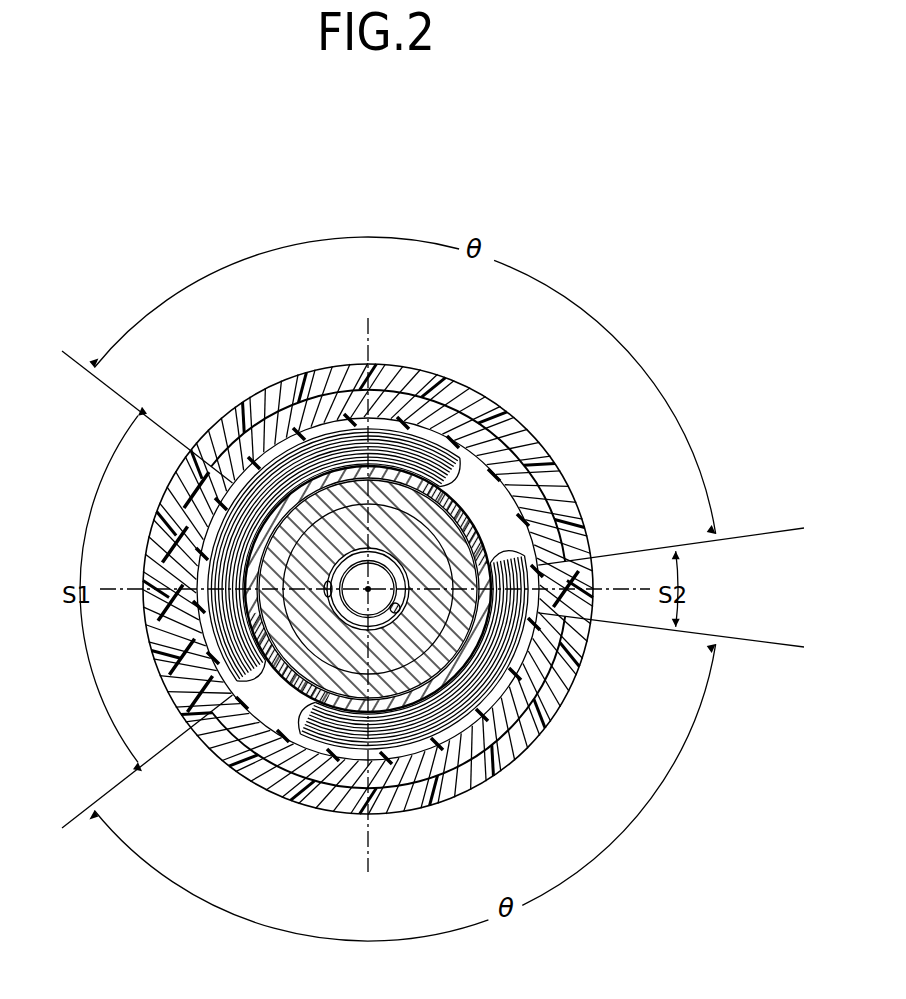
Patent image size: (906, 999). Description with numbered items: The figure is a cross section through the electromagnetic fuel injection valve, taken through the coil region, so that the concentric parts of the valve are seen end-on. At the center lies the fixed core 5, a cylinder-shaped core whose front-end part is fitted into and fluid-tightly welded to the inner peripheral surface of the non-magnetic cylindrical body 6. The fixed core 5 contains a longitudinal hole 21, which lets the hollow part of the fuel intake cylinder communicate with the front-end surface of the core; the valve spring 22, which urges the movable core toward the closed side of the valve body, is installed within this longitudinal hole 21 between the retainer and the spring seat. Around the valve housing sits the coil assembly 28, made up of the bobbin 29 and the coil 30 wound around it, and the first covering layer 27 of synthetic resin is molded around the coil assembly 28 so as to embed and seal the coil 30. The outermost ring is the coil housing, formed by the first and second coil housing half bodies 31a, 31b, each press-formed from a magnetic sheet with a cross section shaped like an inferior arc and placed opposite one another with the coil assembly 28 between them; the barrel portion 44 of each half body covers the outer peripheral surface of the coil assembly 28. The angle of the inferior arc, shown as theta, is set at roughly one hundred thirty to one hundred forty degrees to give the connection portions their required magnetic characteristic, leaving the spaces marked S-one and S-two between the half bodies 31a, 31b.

The fixed core 5 is at (452, 556).
The non-magnetic cylindrical body 6 is at (470, 655).
The longitudinal hole 21 is at (329, 596).
The valve spring 22 is at (357, 563).
The first covering layer 27 is at (474, 453).
The coil assembly 28 is at (604, 432).
The bobbin 29 is at (528, 548).
The coil 30 is at (483, 493).
The first coil housing half body 31a is at (405, 790).
The second coil housing half body 31b is at (400, 388).
The barrel portion 44 is at (270, 418).